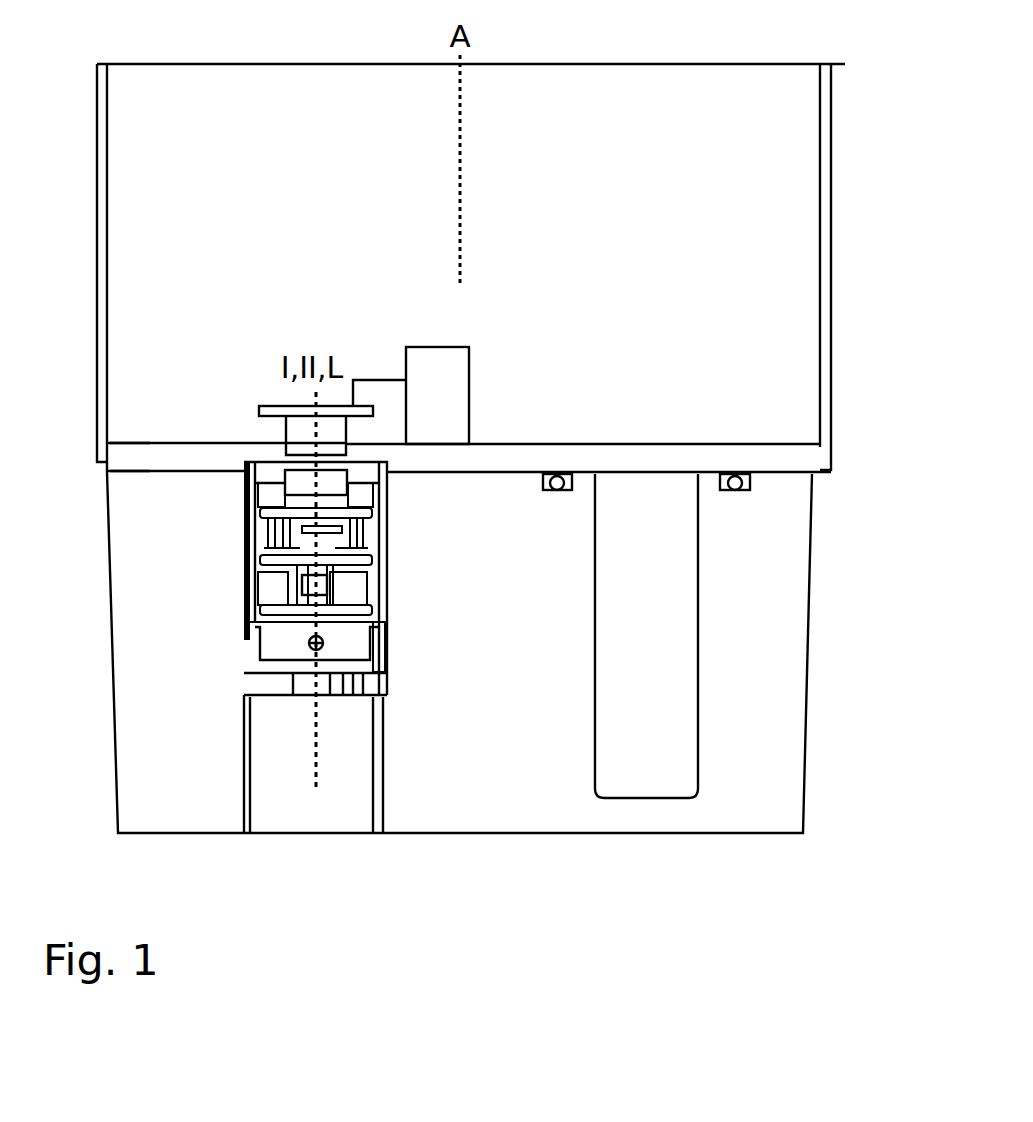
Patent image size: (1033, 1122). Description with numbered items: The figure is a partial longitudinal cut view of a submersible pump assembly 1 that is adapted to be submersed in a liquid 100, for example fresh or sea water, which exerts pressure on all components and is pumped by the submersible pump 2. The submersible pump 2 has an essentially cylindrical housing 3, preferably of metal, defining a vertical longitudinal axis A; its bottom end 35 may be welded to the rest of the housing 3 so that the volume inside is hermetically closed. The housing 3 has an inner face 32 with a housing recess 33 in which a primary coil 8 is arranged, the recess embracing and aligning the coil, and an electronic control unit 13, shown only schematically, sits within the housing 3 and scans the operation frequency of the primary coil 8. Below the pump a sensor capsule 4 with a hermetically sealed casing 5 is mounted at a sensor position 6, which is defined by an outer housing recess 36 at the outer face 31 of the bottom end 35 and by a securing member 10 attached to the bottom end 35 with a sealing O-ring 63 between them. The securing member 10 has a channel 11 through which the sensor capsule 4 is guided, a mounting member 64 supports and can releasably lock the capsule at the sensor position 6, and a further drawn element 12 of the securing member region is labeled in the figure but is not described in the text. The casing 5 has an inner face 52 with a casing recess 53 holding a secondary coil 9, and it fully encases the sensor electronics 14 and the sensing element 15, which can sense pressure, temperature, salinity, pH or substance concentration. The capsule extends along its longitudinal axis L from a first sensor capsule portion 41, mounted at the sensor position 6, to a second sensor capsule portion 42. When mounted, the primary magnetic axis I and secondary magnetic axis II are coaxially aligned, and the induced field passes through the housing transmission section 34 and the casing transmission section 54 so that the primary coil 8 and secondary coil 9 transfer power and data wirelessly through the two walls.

The submersible pump assembly 1 is at (826, 794).
The submersible pump 2 is at (560, 117).
The housing 3 is at (103, 83).
The sensor capsule 4 is at (233, 662).
The casing 5 is at (253, 541).
The sensor position 6 is at (478, 489).
The primary coil 8 is at (305, 425).
The secondary coil 9 is at (305, 479).
The securing member 10 is at (182, 803).
The channel 11 is at (312, 803).
The support column 12 is at (363, 697).
The electronic control unit 13 is at (420, 399).
The sensor electronics 14 is at (280, 574).
The sensing element 15 is at (305, 655).
The outer face 31 is at (480, 482).
The inner face 32 is at (475, 441).
The housing recess 33 is at (285, 444).
The housing transmission section 34 is at (97, 419).
The bottom end 35 is at (467, 475).
The outer housing recess 36 is at (403, 494).
The first sensor capsule portion 41 is at (240, 503).
The second sensor capsule portion 42 is at (396, 660).
The inner face 52 is at (253, 631).
The casing recess 53 is at (381, 468).
The casing transmission section 54 is at (250, 458).
The sealing O-ring 63 is at (568, 492).
The mounting member 64 is at (267, 698).
The liquid 100 is at (692, 894).